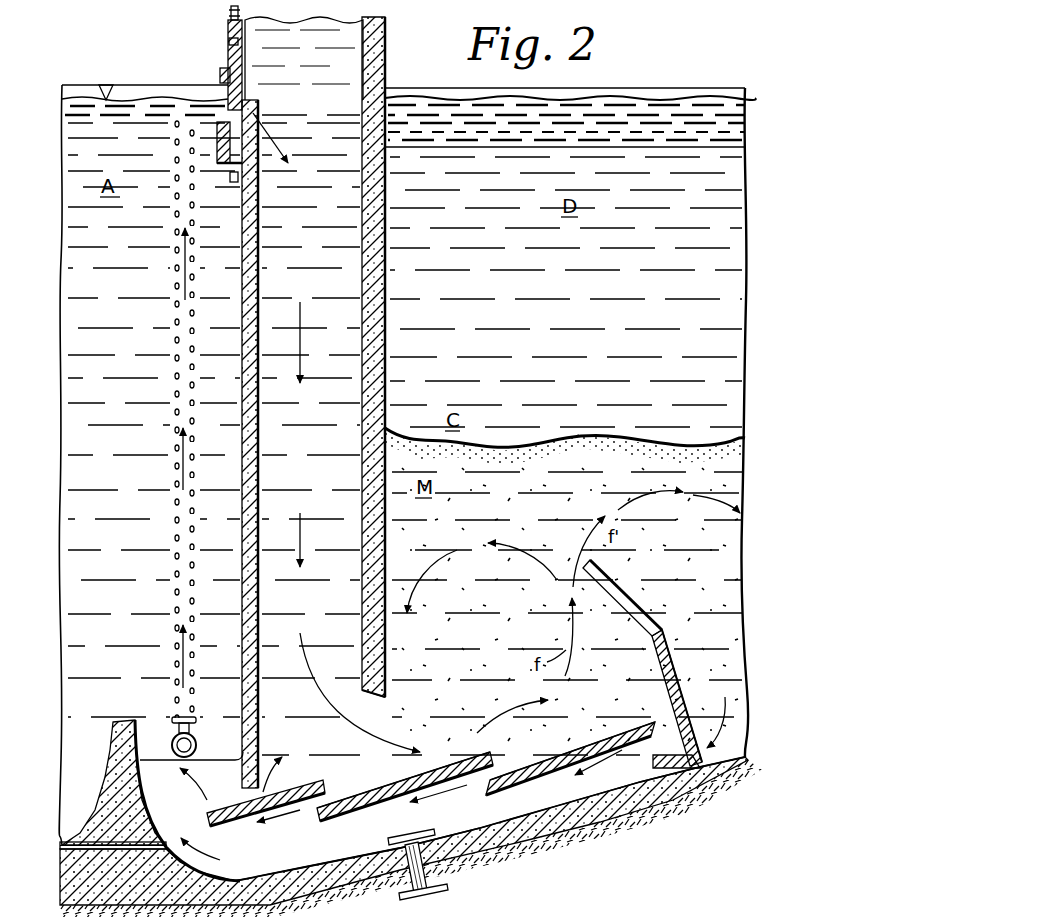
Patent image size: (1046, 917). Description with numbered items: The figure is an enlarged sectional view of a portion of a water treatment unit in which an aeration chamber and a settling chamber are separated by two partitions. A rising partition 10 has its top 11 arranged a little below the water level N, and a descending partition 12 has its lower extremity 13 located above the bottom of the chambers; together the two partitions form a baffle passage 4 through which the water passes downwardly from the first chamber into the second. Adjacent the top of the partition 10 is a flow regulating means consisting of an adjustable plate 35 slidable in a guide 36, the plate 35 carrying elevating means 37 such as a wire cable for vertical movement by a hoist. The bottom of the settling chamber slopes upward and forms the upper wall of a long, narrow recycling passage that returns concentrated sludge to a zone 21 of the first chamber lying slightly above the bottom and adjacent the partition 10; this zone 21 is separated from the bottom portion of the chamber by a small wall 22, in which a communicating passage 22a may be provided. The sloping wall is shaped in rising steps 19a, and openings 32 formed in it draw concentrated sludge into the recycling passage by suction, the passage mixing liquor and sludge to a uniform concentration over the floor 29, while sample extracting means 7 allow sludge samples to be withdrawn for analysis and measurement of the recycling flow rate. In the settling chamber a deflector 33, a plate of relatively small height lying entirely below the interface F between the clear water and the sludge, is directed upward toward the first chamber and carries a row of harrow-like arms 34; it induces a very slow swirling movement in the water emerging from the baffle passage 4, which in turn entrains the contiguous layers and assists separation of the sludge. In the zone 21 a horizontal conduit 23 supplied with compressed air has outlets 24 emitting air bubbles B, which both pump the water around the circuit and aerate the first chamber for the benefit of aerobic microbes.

The baffle passage 4 is at (312, 217).
The sample extracting means 7 is at (428, 858).
The rising partition 10 is at (259, 499).
The top of partition 11 is at (250, 118).
The descending partition 12 is at (388, 216).
The lower extremity of partition 13 is at (368, 690).
The rising steps 19a is at (300, 788).
The zone 21 is at (222, 742).
The small wall 22 is at (113, 746).
The communicating passage 22a is at (62, 844).
The horizontal conduit 23 is at (168, 740).
The outlets 24 is at (188, 724).
The floor 29 is at (411, 837).
The openings 32 is at (308, 812).
The deflector 33 is at (672, 675).
The arms 34 is at (640, 614).
The adjustable plate 35 is at (230, 44).
The guide 36 is at (223, 167).
The elevating means 37 is at (231, 16).
The water level N is at (145, 82).
The air bubbles B is at (174, 406).
The interface F is at (537, 450).